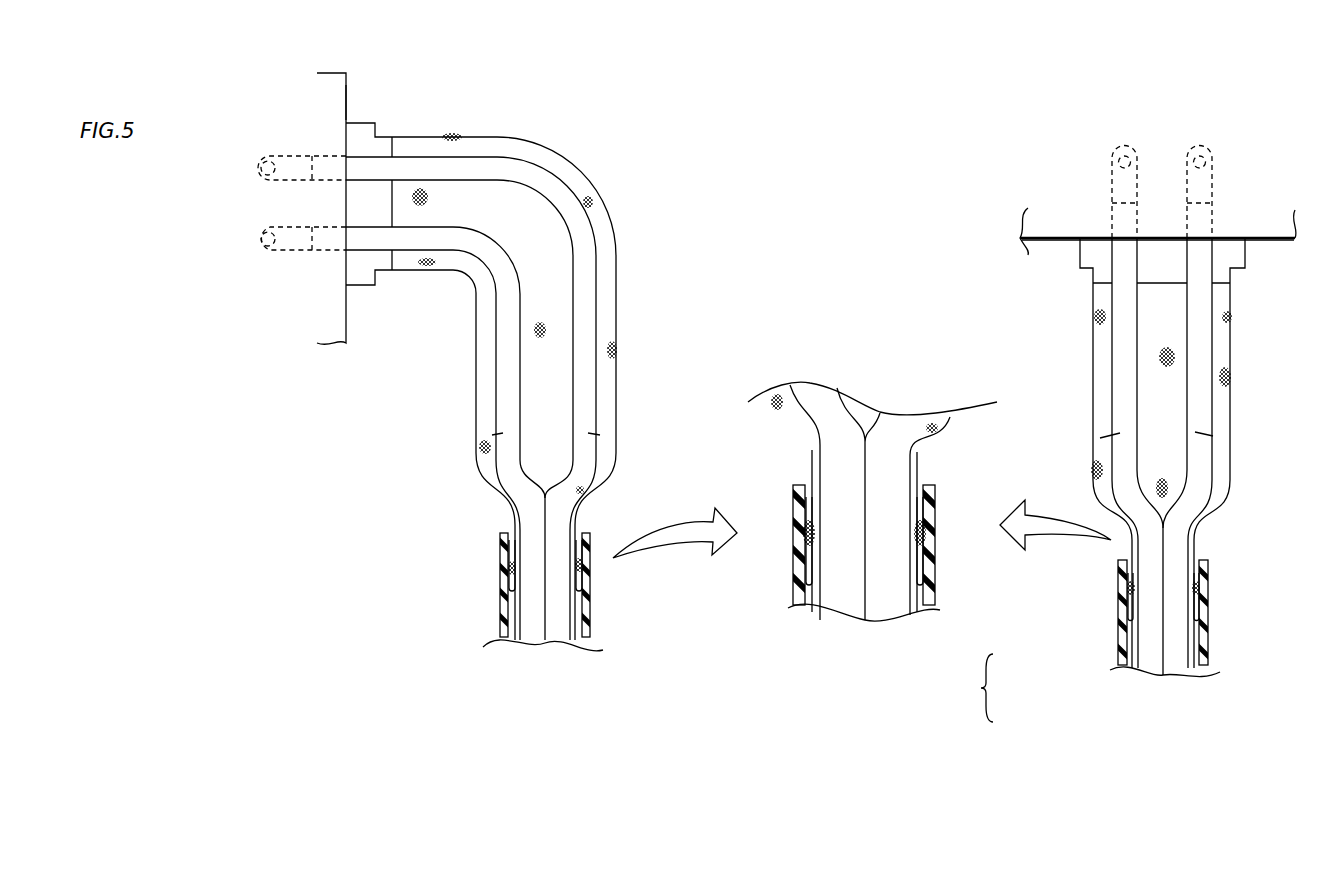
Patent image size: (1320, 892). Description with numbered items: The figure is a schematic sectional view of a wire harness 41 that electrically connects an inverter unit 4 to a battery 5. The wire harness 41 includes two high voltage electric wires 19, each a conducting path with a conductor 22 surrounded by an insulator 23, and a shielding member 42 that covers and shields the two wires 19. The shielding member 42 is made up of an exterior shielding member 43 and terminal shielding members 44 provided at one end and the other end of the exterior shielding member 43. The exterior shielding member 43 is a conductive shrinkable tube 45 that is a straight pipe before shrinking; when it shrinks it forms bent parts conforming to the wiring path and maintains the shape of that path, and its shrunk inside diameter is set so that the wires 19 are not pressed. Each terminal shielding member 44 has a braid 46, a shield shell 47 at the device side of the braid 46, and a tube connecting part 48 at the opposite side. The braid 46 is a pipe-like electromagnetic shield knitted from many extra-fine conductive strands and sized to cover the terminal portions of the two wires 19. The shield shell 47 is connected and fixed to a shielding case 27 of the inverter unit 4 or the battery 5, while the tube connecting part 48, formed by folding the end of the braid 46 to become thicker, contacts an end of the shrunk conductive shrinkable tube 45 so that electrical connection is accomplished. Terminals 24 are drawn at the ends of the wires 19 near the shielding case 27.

The inverter unit 4 is at (340, 72).
The battery 5 is at (1020, 212).
The high voltage electric wire 19 is at (498, 390).
The conductor 22 is at (472, 452).
The insulator 23 is at (498, 418).
The terminal 24 is at (280, 156).
The shielding case 27 is at (350, 83).
The wire harness 41 is at (669, 190).
The shielding member 42 is at (970, 688).
The exterior shielding member 43 is at (596, 622).
The terminal shielding member 44 is at (609, 212).
The conductive shrinkable tube 45 is at (498, 618).
The braid 46 is at (613, 352).
The shield shell 47 is at (357, 122).
The tube connecting part 48 is at (506, 576).